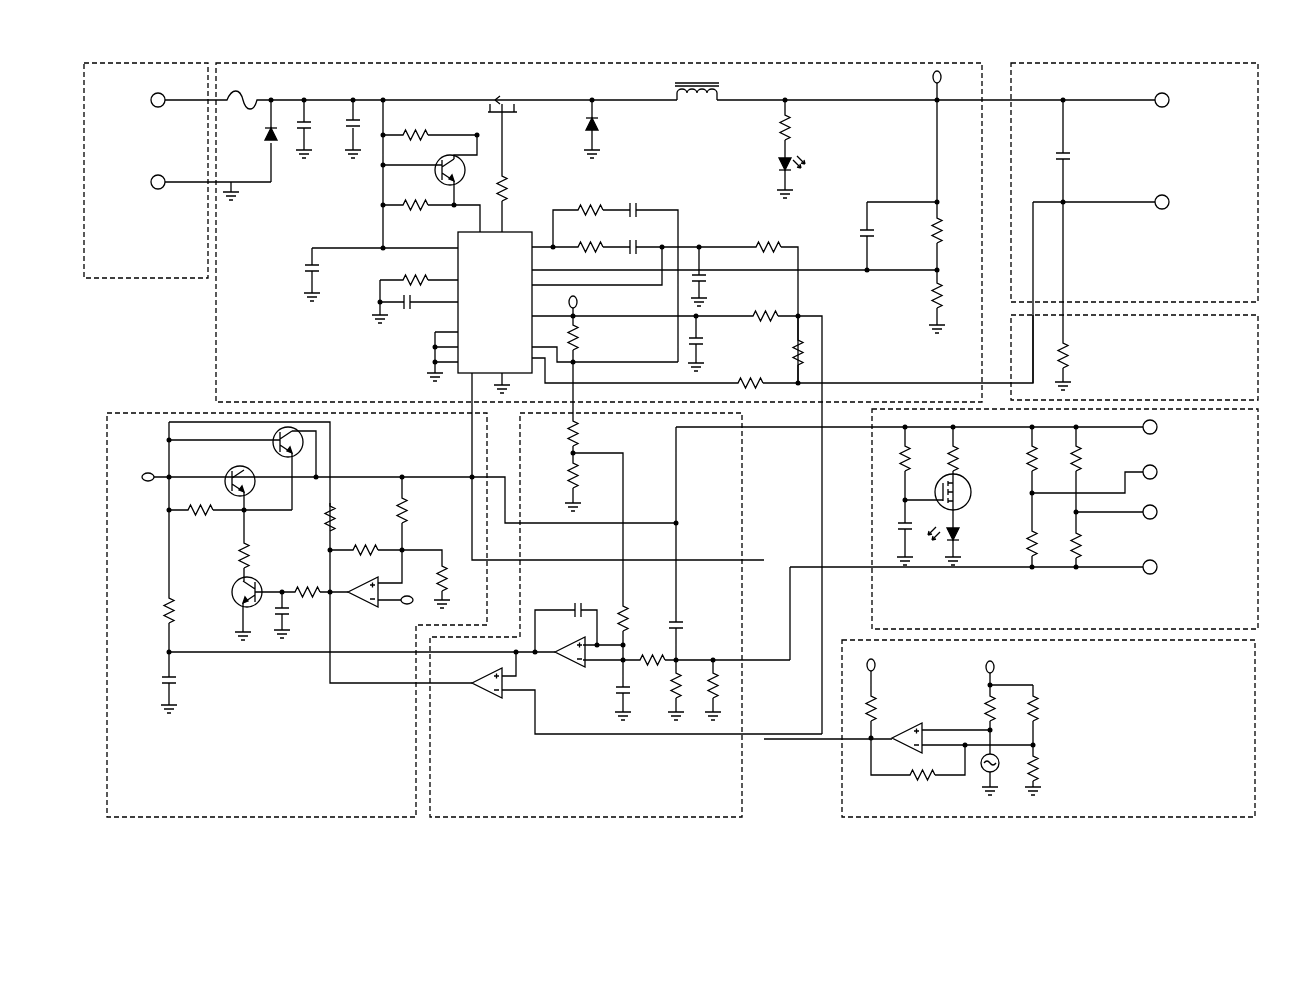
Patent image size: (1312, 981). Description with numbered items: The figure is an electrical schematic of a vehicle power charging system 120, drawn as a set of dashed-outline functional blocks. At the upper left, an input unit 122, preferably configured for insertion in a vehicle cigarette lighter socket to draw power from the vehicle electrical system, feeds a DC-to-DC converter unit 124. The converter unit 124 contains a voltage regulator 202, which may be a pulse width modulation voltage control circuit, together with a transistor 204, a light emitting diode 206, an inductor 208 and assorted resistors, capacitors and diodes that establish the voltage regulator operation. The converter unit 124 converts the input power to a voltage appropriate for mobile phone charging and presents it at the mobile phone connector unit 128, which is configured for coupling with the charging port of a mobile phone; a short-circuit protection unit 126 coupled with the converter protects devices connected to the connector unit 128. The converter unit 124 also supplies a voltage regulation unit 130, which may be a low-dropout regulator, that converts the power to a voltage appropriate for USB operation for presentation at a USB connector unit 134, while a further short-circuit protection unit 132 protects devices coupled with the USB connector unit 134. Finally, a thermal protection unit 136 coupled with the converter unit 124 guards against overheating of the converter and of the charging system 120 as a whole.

The vehicle power charging system 120 is at (873, 878).
The input unit 122 is at (157, 280).
The DC-to-DC converter unit 124 is at (216, 355).
The short-circuit protection unit 126 is at (1258, 362).
The mobile phone connector unit 128 is at (1258, 178).
The voltage regulation unit 130 is at (232, 818).
The short-circuit protection unit 132 is at (594, 818).
The USB connector unit 134 is at (1258, 512).
The thermal protection unit 136 is at (1044, 818).
The voltage regulator 202 is at (458, 318).
The transistor 204 is at (437, 172).
The Light Emitting Diode (LED) 206 is at (788, 162).
The inductor 208 is at (705, 100).